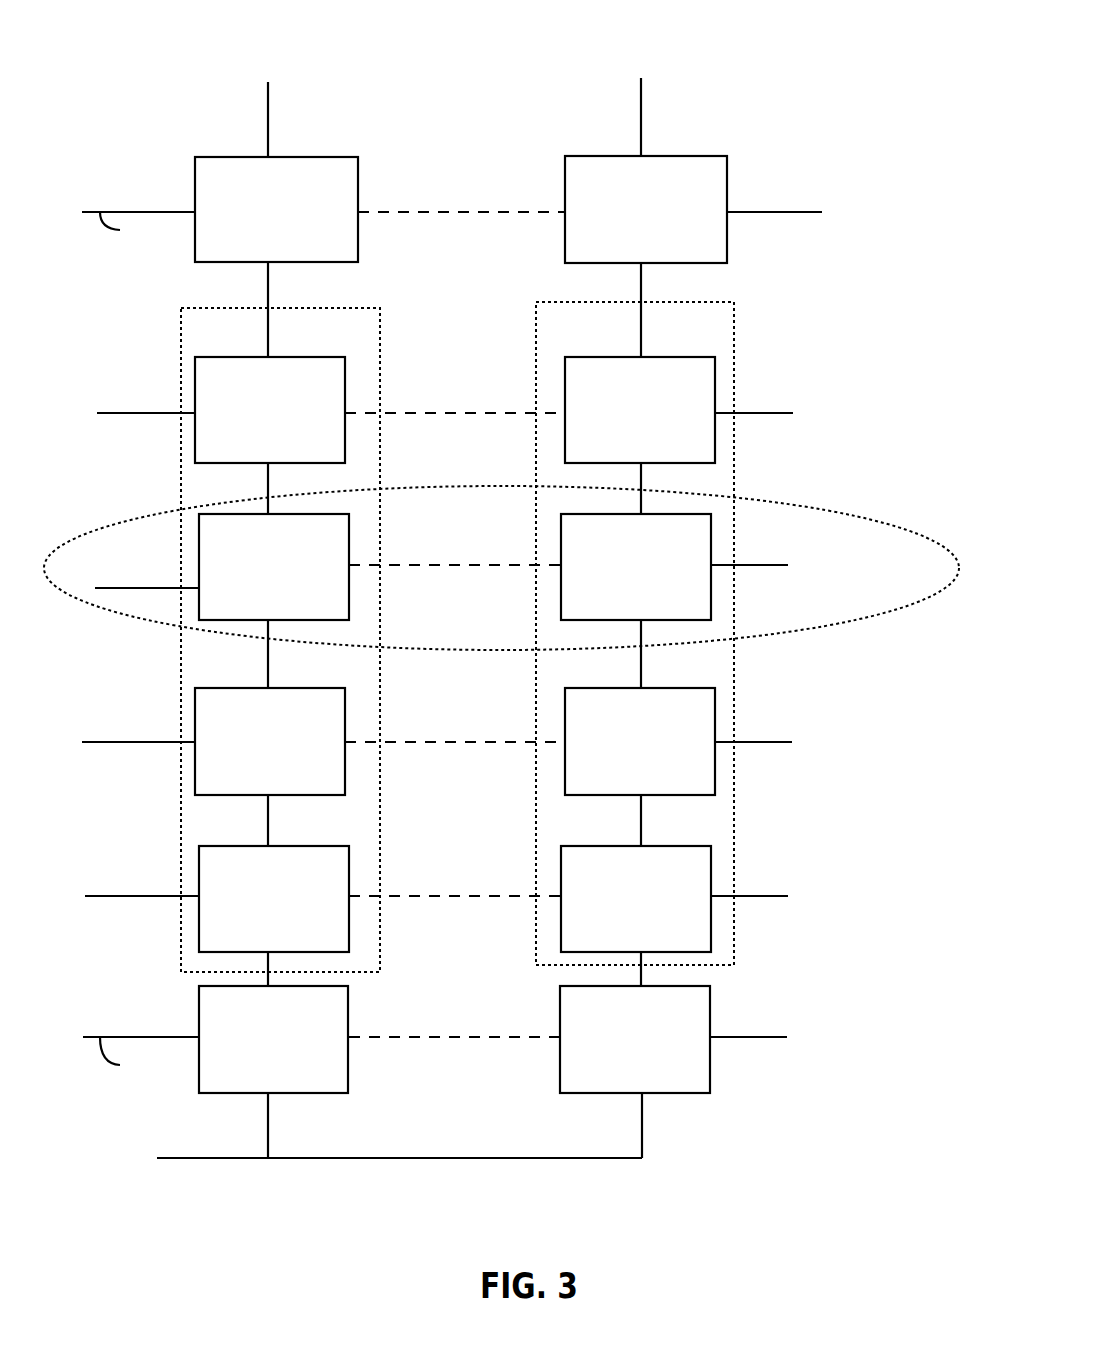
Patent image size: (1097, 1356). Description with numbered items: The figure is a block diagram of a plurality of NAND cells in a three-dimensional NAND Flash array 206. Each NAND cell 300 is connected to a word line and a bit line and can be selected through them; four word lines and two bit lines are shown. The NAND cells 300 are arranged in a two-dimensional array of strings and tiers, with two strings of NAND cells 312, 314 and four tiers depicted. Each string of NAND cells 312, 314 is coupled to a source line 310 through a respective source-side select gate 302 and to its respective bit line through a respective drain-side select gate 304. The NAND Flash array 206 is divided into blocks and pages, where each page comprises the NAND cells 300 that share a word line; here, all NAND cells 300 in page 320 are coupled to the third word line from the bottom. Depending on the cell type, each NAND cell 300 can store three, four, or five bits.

The 3D NAND Flash array 206 is at (501, 605).
The NAND cell 300 is at (250, 427).
The source-side select gate 302 is at (255, 1053).
The drain-side select gate 304 is at (250, 222).
The source line 310 is at (195, 1158).
The string of NAND cells 312 is at (342, 308).
The string of NAND cells 314 is at (710, 302).
The page 320 is at (803, 507).